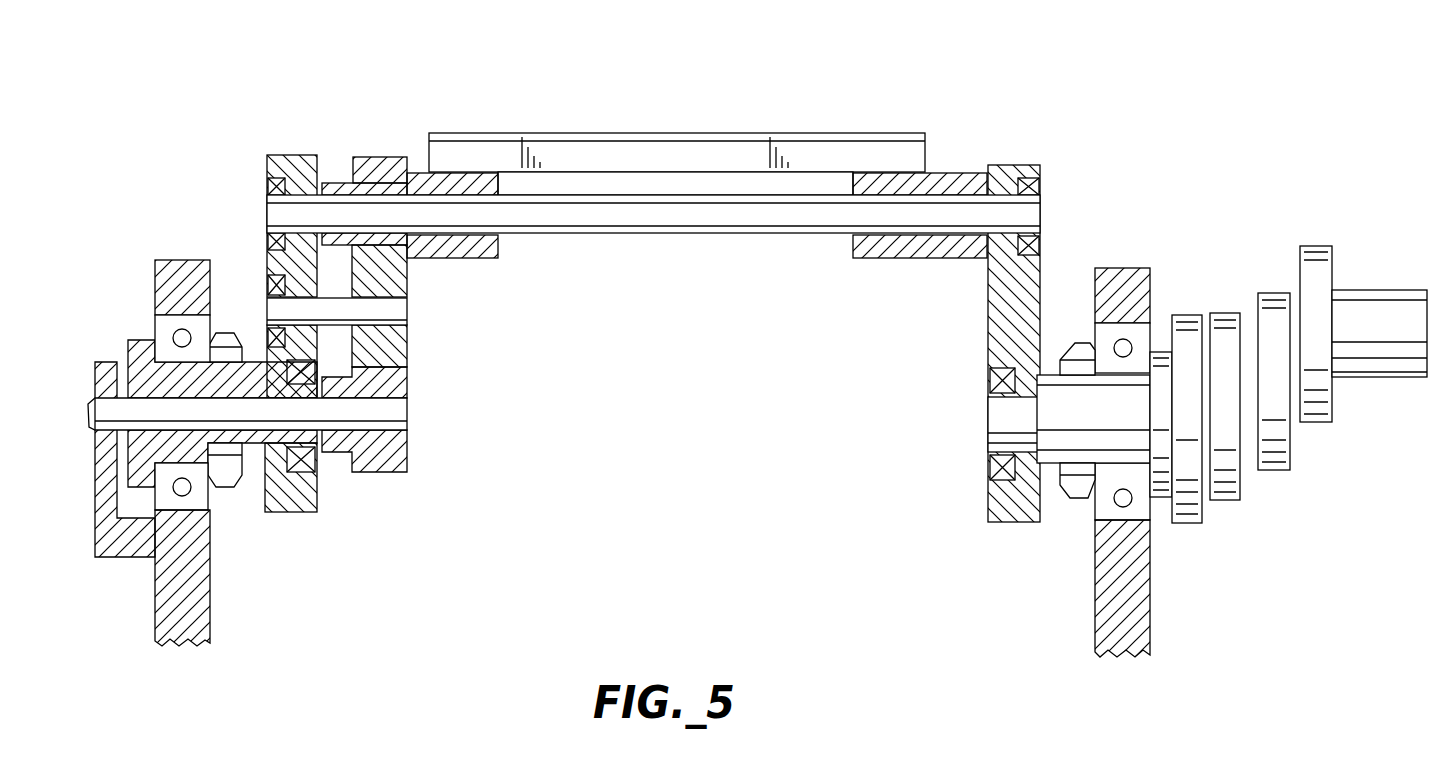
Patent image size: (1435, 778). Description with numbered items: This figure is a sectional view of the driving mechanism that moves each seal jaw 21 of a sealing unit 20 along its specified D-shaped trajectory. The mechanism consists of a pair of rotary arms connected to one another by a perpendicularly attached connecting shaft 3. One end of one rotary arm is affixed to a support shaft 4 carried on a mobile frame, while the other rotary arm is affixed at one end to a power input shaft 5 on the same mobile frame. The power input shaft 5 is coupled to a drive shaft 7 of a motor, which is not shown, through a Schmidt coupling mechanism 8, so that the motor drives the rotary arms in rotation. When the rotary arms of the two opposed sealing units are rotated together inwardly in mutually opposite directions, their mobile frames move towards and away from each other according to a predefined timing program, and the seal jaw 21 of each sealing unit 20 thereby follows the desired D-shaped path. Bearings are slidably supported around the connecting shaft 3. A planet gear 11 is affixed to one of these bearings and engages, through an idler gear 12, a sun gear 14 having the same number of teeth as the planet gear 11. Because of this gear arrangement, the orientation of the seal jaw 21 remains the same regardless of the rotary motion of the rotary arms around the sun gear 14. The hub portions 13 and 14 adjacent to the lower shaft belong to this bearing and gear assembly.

The connecting shaft 3 is at (645, 233).
The support shaft 4 is at (140, 340).
The power input shaft 5 is at (997, 408).
The drive shaft 7 is at (1362, 297).
The Schmidt coupling mechanism 8 is at (1155, 237).
The planet gear 11 is at (352, 173).
The idler gear 12 is at (408, 340).
The bearing hub 13 is at (318, 443).
The sun gear 14 is at (408, 447).
The sealing unit 20 is at (803, 112).
The seal jaw 21 is at (562, 172).